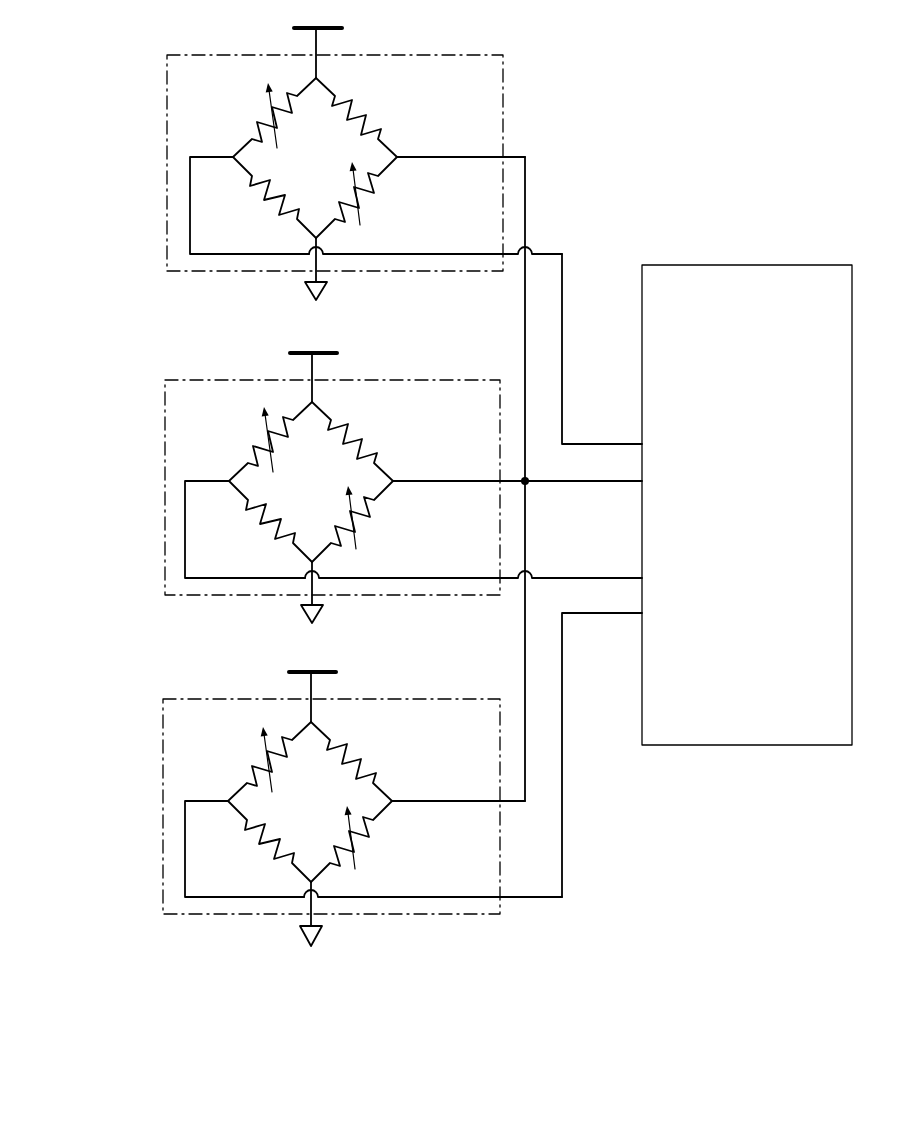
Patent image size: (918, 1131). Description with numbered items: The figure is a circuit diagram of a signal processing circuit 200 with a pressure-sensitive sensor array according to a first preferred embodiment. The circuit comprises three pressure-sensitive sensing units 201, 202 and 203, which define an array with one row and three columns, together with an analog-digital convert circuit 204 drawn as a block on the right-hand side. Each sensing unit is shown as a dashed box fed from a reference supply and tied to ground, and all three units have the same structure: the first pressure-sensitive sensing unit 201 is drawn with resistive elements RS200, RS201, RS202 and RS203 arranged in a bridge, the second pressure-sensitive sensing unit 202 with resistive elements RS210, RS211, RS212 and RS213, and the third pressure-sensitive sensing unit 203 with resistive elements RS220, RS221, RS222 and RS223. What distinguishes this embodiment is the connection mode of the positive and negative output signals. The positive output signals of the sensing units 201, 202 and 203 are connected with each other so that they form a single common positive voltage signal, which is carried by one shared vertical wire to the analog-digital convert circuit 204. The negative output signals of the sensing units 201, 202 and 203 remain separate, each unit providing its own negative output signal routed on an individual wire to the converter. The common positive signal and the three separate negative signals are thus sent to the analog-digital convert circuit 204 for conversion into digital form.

The signal processing circuit 200 is at (96, 68).
The pressure-sensitive sensing unit 201 is at (507, 567).
The pressure-sensitive sensing unit 202 is at (507, 644).
The pressure-sensitive sensing unit 203 is at (507, 644).
The analog-digital convert circuit 204 is at (681, 265).
The variable resistor RS200 is at (257, 117).
The resistor RS201 is at (375, 117).
The resistor RS202 is at (257, 197).
The variable resistor RS203 is at (371, 197).
The variable resistor RS210 is at (253, 441).
The resistor RS211 is at (370, 441).
The resistor RS212 is at (253, 521).
The variable resistor RS213 is at (367, 521).
The variable resistor RS220 is at (253, 761).
The resistor RS221 is at (369, 761).
The resistor RS222 is at (253, 841).
The variable resistor RS223 is at (365, 841).